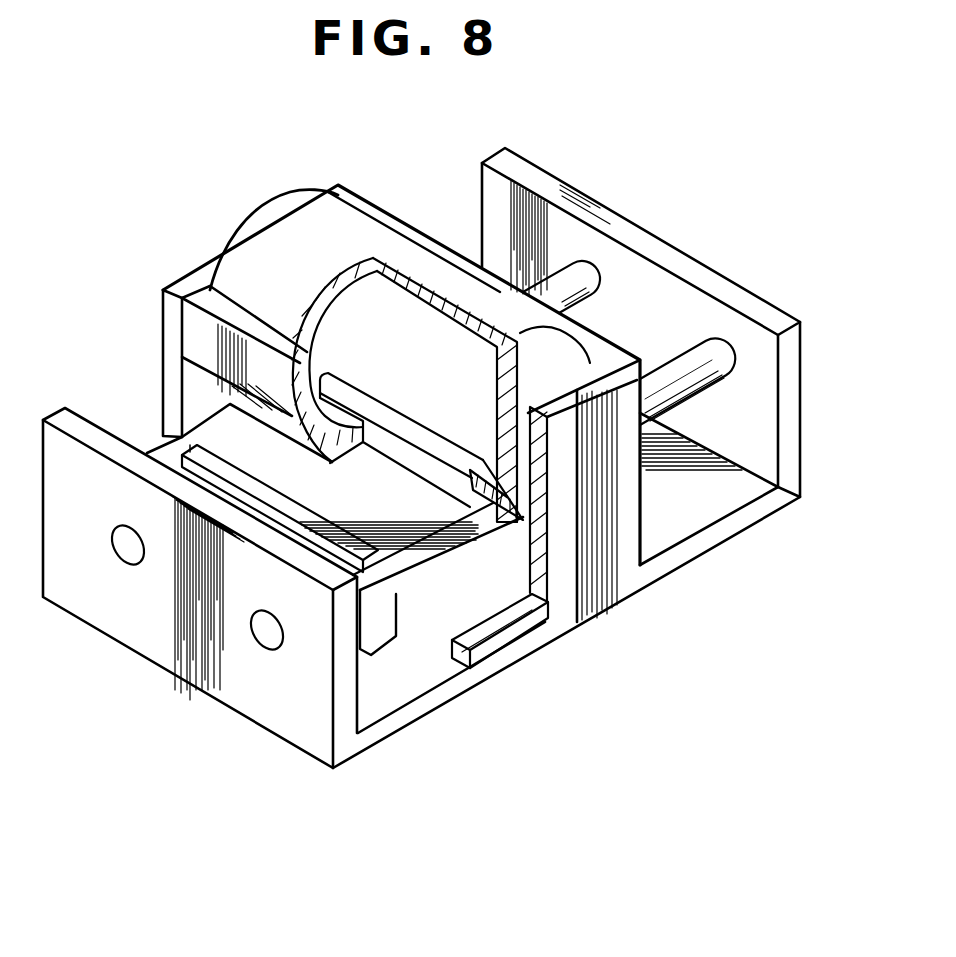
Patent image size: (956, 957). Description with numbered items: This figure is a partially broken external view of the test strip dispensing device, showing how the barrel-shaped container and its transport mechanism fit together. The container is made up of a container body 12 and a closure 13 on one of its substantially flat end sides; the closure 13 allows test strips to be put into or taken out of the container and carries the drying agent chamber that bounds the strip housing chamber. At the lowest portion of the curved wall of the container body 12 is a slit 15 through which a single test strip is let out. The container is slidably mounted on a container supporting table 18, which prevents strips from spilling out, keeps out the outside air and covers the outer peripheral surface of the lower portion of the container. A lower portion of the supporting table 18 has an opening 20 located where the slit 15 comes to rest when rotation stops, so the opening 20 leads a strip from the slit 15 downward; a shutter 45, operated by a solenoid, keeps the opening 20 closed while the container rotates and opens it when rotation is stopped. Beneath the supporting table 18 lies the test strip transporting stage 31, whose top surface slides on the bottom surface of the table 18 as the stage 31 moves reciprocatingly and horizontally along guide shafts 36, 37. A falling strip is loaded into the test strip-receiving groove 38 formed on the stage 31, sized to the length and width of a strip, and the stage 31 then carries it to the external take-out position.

The container body 12 is at (300, 198).
The closure 13 is at (568, 343).
The slit 15 is at (377, 407).
The container supporting table 18 is at (190, 326).
The opening 20 is at (442, 455).
The test strip transporting stage 31 is at (382, 633).
The guide shaft 36 is at (133, 558).
The guide shaft 37 is at (263, 645).
The test strip-receiving groove 38 is at (507, 518).
The shutter 45 is at (172, 452).